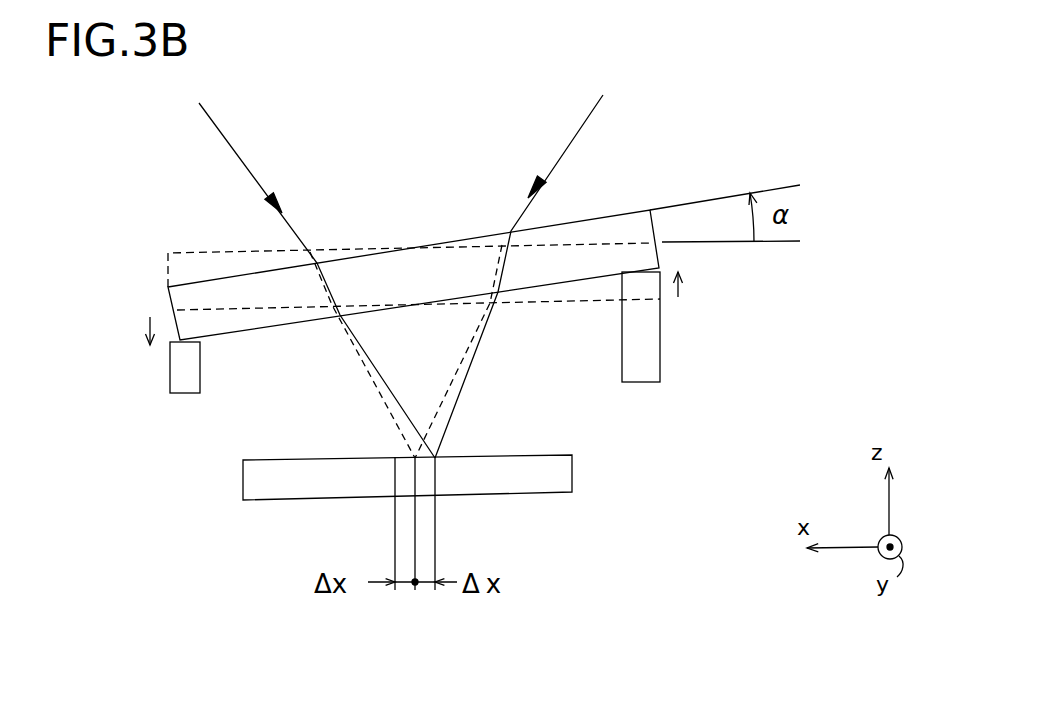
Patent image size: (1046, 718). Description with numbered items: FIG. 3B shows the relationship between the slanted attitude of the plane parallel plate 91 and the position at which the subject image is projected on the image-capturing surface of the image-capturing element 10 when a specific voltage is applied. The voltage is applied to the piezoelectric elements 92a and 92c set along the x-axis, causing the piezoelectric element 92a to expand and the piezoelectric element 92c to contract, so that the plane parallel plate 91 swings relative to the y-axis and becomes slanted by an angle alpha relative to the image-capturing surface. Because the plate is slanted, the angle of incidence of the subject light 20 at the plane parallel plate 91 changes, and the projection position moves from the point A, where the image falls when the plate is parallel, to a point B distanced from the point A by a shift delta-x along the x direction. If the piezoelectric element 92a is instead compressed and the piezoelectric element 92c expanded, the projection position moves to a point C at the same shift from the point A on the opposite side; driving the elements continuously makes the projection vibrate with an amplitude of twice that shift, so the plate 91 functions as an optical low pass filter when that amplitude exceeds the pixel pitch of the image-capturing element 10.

The image-capturing element 10 is at (528, 494).
The subject light 20 is at (230, 142).
The plane parallel plate 91 is at (212, 282).
The piezoelectric element 92a is at (657, 362).
The piezoelectric element 92c is at (172, 363).
The point A is at (413, 457).
The point B is at (437, 457).
The point C is at (396, 458).